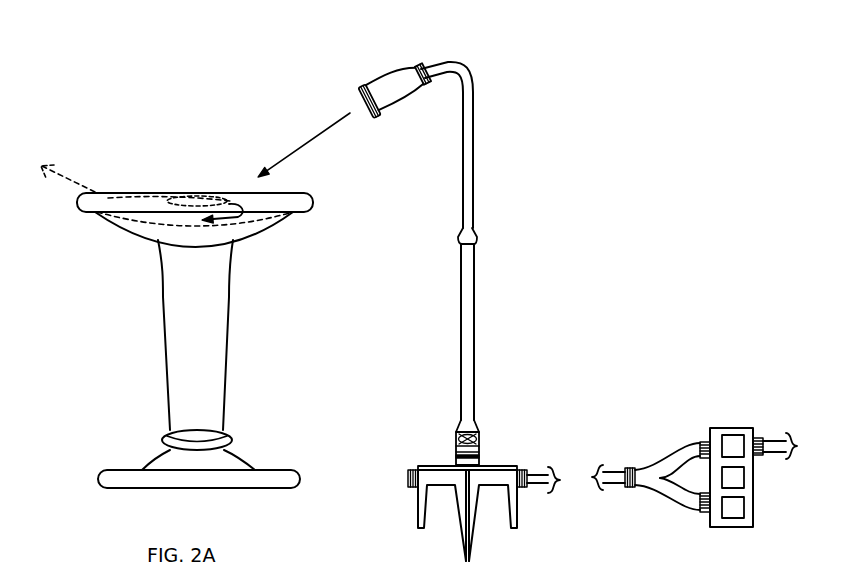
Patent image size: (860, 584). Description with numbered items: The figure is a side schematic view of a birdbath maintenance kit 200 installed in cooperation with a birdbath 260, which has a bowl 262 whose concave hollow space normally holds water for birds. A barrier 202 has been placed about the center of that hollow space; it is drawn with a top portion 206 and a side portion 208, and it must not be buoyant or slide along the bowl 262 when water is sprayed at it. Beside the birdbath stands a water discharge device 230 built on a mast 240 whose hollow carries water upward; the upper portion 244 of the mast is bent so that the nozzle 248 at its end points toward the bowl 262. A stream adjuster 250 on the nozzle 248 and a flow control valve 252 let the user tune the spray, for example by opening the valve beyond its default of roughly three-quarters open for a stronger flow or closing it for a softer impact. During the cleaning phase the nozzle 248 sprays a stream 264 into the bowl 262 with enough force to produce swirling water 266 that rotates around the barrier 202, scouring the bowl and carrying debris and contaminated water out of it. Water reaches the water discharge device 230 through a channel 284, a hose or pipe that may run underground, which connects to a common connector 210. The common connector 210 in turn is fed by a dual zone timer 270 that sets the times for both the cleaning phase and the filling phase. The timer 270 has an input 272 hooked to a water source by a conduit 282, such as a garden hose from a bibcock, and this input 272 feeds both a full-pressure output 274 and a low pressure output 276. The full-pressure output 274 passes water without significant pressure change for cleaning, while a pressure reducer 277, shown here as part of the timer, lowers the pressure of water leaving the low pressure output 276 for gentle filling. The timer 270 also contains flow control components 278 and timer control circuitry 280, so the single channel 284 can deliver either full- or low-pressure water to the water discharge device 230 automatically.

The birdbath maintenance kit 200 is at (725, 62).
The birdbath 260 is at (89, 121).
The bowl 262 is at (137, 229).
The stream 264 is at (288, 152).
The swirling water 266 is at (243, 214).
The barrier 202 is at (205, 205).
The top portion 206 is at (183, 201).
The side portion 208 is at (163, 212).
The mast 240 is at (505, 121).
The upper portion 244 is at (463, 214).
The nozzle 248 is at (388, 75).
The stream adjuster 250 is at (373, 117).
The flow control valve 252 is at (422, 62).
The water discharge device 230 is at (506, 265).
The channel 284 is at (620, 470).
The common connector 210 is at (641, 507).
The dual zone timer 270 is at (733, 355).
The input 272 is at (759, 438).
The full-pressure output 274 is at (703, 442).
The low pressure output 276 is at (702, 510).
The pressure reducer 277 is at (738, 485).
The flow control components 278 is at (729, 437).
The timer control circuitry 280 is at (736, 518).
The conduit 282 is at (780, 456).